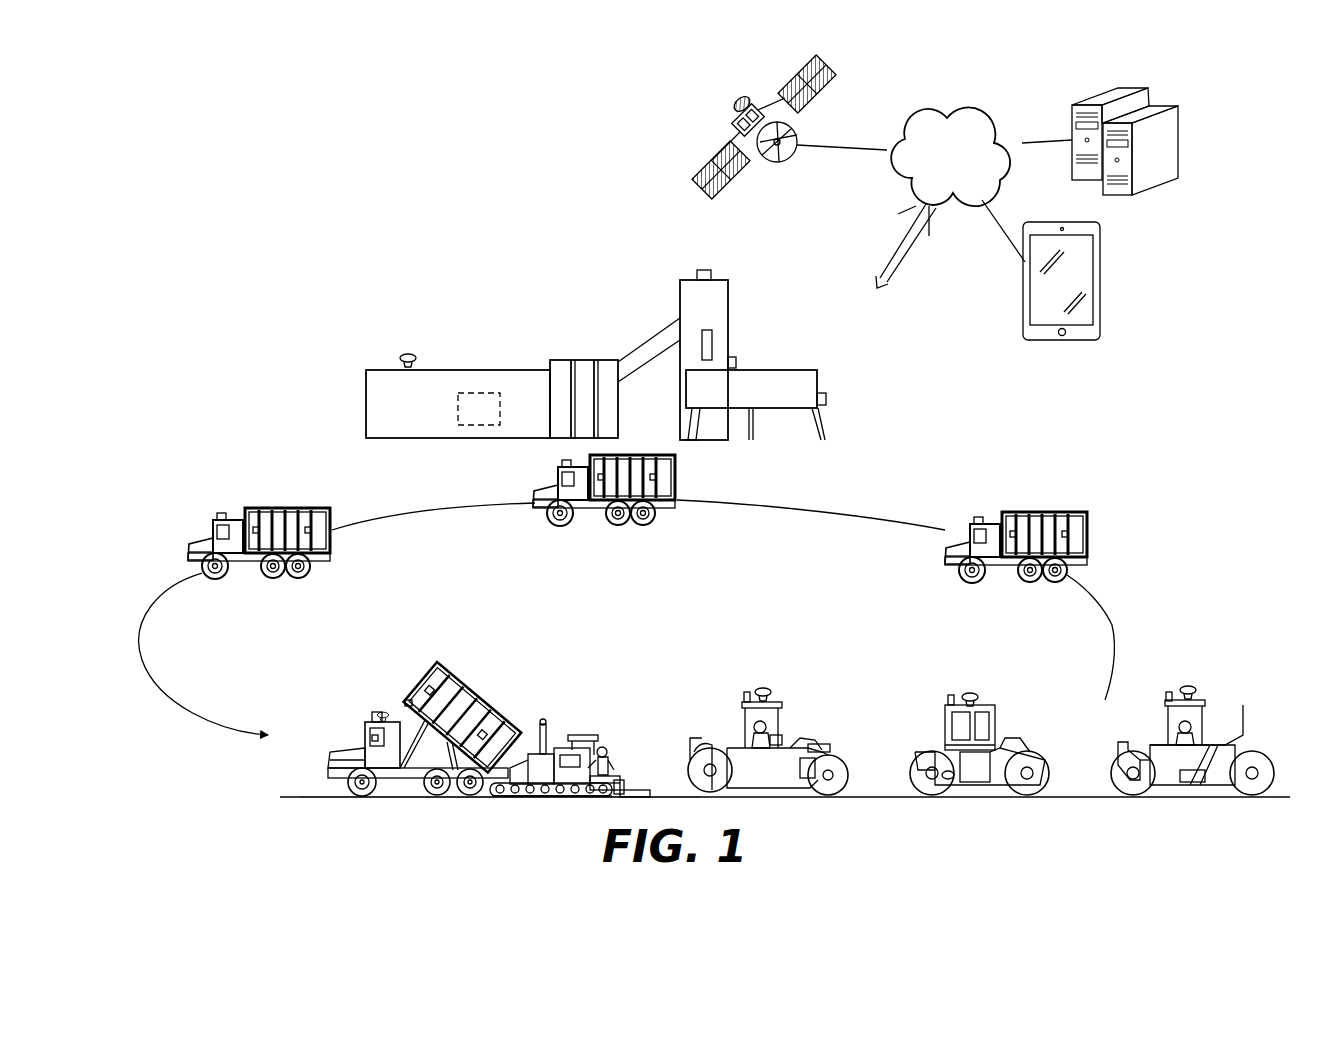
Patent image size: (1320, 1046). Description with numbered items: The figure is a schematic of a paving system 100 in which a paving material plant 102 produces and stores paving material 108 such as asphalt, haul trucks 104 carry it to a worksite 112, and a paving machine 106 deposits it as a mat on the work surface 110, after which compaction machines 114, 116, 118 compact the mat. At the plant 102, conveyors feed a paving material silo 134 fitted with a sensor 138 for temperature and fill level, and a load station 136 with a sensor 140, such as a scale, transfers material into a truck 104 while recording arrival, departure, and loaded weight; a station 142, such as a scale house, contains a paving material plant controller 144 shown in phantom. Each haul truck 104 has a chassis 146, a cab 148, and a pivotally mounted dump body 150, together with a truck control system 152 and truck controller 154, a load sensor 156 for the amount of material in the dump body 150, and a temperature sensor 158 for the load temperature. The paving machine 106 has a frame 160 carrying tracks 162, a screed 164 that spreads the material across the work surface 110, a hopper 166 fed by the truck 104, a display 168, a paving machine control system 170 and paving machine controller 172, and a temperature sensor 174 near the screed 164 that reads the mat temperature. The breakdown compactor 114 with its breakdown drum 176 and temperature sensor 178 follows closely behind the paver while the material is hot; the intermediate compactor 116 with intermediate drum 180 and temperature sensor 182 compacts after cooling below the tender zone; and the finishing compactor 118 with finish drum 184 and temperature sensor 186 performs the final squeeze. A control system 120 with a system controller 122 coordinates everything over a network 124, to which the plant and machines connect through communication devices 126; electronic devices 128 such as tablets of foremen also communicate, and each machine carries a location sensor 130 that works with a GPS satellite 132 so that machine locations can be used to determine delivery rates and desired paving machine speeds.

The paving system 100 is at (200, 238).
The paving material plant 102 is at (543, 245).
The haul truck 104 is at (222, 505).
The paving machine 106 is at (552, 737).
The paving material 108 is at (642, 797).
The work surface 110 is at (290, 797).
The worksite 112 is at (325, 808).
The compaction machine 114 is at (762, 718).
The compaction machine 116 is at (956, 766).
The compaction machine 118 is at (1160, 766).
The control system 120 is at (1190, 75).
The system controller 122 is at (1145, 195).
The network 124 is at (968, 181).
The communication device 126 is at (404, 357).
The electronic device 128 is at (1102, 300).
The location sensor 130 is at (372, 737).
The GPS satellite 132 is at (745, 100).
The paving material silo 134 is at (680, 297).
The load station 136 is at (800, 370).
The sensor 138 is at (713, 340).
The sensor 140 is at (827, 399).
The station 142 is at (527, 370).
The paving material plant controller 144 is at (478, 393).
The chassis 146 is at (272, 731).
The cab 148 is at (400, 705).
The dump body 150 is at (428, 663).
The truck control system 152 is at (368, 655).
The truck controller 154 is at (340, 752).
The load sensor 156 is at (409, 700).
The temperature sensor 158 is at (540, 712).
The frame 160 is at (560, 745).
The tracks 162 is at (510, 798).
The screed 164 is at (628, 762).
The hopper 166 is at (482, 800).
The display 168 is at (582, 740).
The paving machine control system 170 is at (572, 628).
The paving machine controller 172 is at (565, 742).
The temperature sensor 174 is at (622, 790).
The breakdown drum 176 is at (730, 797).
The temperature sensor 178 is at (680, 740).
The intermediate drum 180 is at (950, 797).
The temperature sensor 182 is at (826, 746).
The finish drum 184 is at (1150, 797).
The temperature sensor 186 is at (1118, 752).